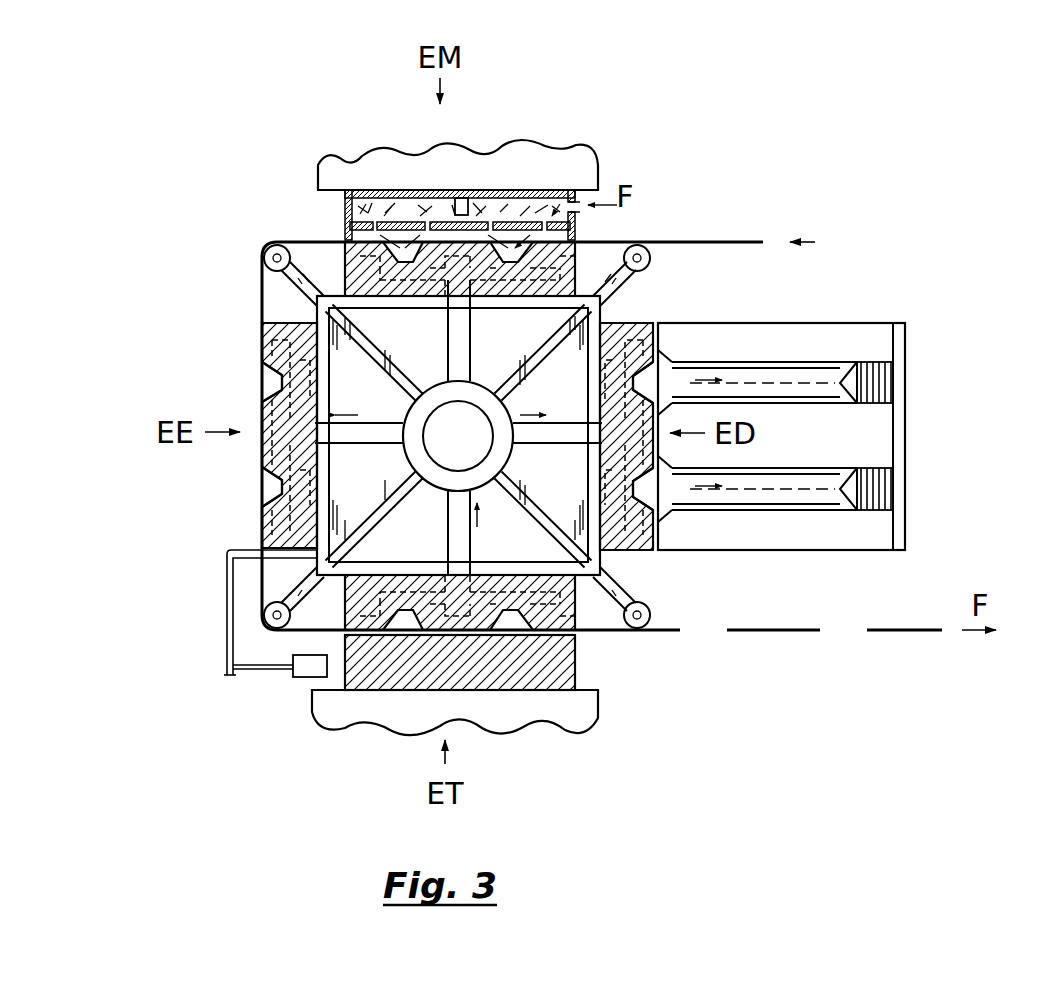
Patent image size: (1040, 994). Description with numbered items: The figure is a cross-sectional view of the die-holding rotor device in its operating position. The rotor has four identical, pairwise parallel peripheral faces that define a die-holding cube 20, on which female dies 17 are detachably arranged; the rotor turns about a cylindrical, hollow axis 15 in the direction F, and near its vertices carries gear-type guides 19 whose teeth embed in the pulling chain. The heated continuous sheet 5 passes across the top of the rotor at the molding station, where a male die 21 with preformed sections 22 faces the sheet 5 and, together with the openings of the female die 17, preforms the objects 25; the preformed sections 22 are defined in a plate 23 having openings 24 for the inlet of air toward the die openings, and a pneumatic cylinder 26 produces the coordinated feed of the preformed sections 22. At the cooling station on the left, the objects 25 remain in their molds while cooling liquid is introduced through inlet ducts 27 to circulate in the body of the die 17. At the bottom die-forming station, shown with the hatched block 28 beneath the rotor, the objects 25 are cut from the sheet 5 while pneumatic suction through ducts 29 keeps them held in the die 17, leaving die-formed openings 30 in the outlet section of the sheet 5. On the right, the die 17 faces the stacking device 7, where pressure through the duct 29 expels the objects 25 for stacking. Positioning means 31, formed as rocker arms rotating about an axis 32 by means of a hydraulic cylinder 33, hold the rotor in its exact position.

The continuous sheet 5 is at (722, 242).
The stacking device 7 is at (878, 345).
The axis of the rotor 15 is at (447, 462).
The female die 17 is at (360, 263).
The guides 19 is at (643, 604).
The die-holding cube 20 is at (330, 312).
The male die 21 is at (340, 208).
The preformed sections 22 is at (392, 196).
The plate 23 is at (510, 228).
The openings 24 is at (575, 232).
The objects 25 is at (262, 378).
The pneumatic cylinder 26 is at (462, 198).
The inlet ducts 27 is at (447, 354).
The lower block 28 is at (527, 690).
The ducts 29 is at (469, 343).
The die-formed openings 30 is at (708, 630).
The positioning means 31 is at (230, 610).
The axis 32 is at (229, 672).
The hydraulic cylinder 33 is at (305, 672).